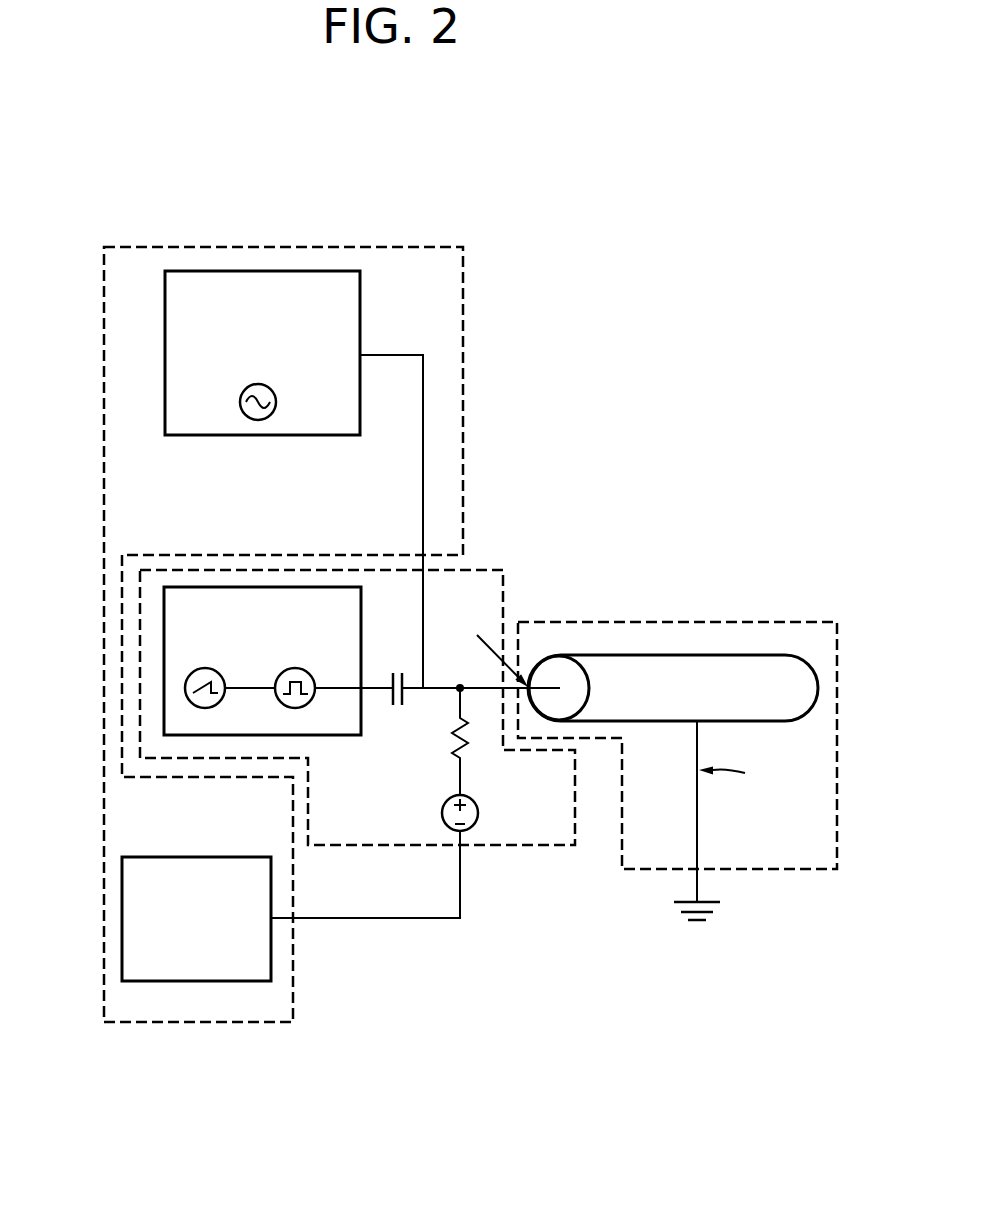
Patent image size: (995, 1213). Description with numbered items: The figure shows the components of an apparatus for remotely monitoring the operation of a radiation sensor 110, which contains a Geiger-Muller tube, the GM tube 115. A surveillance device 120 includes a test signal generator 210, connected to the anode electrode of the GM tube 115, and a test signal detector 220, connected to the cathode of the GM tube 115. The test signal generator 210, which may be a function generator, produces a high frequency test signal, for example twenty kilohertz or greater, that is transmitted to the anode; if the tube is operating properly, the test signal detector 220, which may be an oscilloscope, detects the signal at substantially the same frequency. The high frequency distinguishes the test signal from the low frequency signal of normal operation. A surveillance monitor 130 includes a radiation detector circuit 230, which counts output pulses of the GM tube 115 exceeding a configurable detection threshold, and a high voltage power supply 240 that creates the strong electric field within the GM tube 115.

The radiation sensor 110 is at (795, 929).
The GM tube 115 is at (710, 655).
The surveillance device 120 is at (405, 256).
The surveillance monitor 130 is at (524, 553).
The test signal generator 210 is at (165, 422).
The test signal detector 220 is at (173, 857).
The radiation detector circuit 230 is at (361, 648).
The high voltage power supply 240 is at (478, 800).